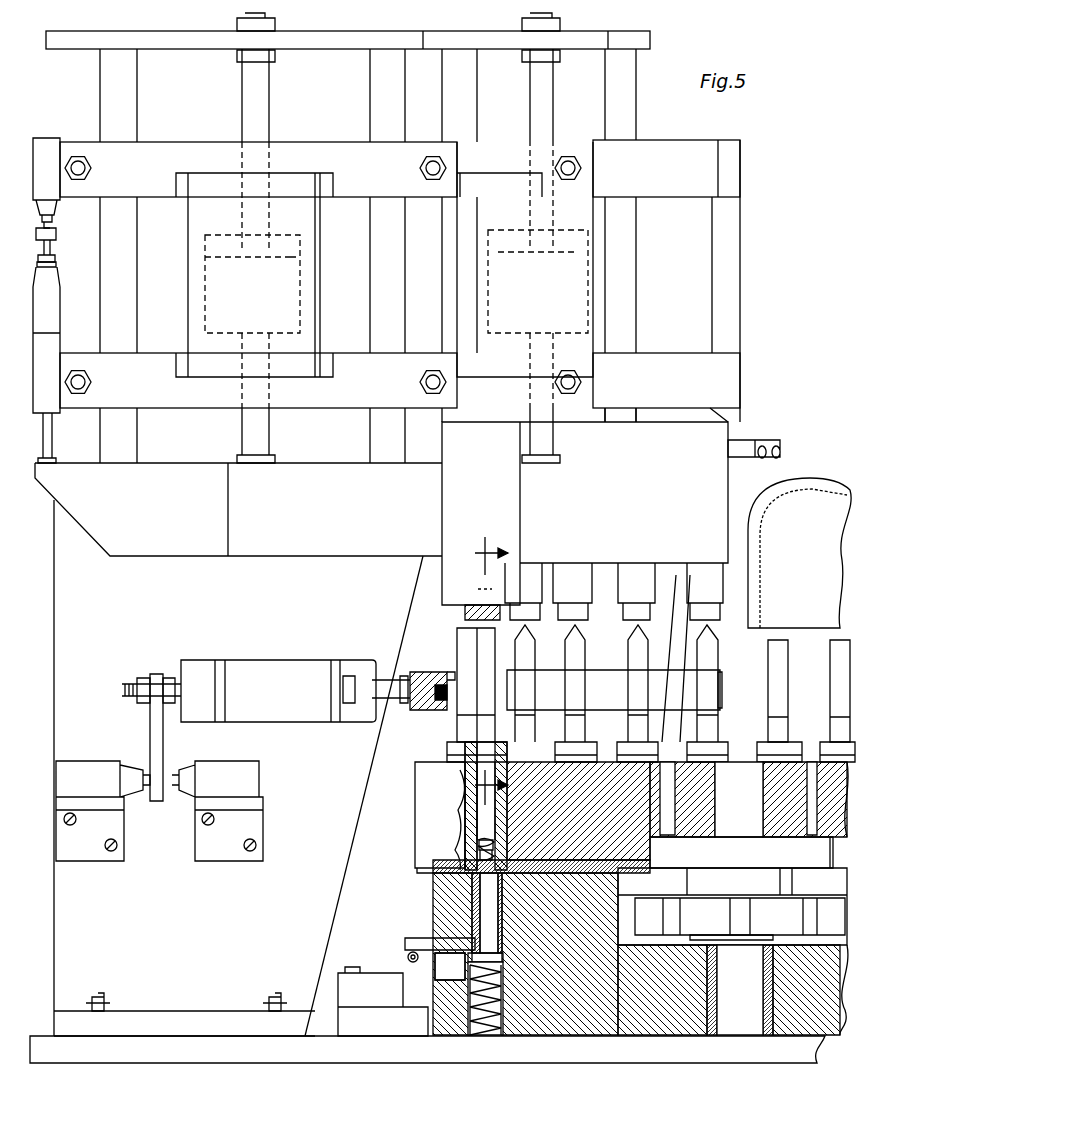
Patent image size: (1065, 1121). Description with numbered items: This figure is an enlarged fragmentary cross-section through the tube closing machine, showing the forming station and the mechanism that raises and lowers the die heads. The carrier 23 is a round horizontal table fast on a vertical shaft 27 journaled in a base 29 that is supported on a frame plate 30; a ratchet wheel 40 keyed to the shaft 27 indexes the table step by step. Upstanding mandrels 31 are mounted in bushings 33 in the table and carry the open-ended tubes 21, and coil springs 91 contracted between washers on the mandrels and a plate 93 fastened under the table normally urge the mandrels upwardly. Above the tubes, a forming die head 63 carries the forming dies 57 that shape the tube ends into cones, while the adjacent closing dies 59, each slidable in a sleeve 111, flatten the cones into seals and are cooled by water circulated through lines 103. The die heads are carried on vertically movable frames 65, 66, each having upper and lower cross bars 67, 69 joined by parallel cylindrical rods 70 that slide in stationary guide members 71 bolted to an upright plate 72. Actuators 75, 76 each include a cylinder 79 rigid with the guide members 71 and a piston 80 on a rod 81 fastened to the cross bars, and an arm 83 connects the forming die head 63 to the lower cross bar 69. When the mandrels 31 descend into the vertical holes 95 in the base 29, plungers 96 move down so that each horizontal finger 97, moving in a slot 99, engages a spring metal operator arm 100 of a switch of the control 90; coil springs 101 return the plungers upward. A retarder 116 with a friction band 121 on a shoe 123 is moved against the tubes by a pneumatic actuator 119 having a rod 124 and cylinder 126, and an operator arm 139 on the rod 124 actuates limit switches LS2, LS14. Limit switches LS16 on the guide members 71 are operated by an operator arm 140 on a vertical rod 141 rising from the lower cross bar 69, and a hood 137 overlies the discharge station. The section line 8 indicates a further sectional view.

The vertically movable frame 65 is at (87, 135).
The vertically movable frame 66 is at (650, 130).
The upper cross bar 67 is at (207, 44).
The lower cross bar 69 is at (206, 557).
The cylindrical rods 70 is at (137, 86).
The stationary guide members 71 is at (336, 143).
The upright plate 72 is at (741, 246).
The fluid-operated actuator 75 is at (196, 240).
The fluid-operated actuator 76 is at (478, 271).
The cylinder 79 is at (321, 229).
The piston 80 is at (204, 258).
The rod 81 is at (248, 106).
The arm 83 is at (318, 557).
The forming die head 63 is at (442, 505).
The section line 8 is at (497, 666).
The cooling water lines 103 is at (768, 440).
The hood 137 is at (812, 480).
The sleeve 111 is at (690, 575).
The closing dies 59 is at (540, 622).
The forming dies 57 is at (465, 612).
The tubes 21 is at (480, 652).
The band 121 is at (455, 672).
The retarder 116 is at (425, 712).
The shoe 123 is at (410, 672).
The rod 124 is at (372, 700).
The cylinder 126 is at (275, 660).
The pneumatic actuator 119 is at (338, 664).
The operator arm 139 is at (150, 740).
The operator arm 140 is at (55, 236).
The vertical rod 141 is at (52, 437).
The mandrels 31 is at (480, 735).
The carrier 23 is at (414, 822).
The bushings 33 is at (462, 800).
The coil springs 91 is at (510, 822).
The vertical shaft 27 is at (722, 798).
The ratchet wheel 40 is at (660, 935).
The base 29 is at (630, 1036).
The plate 93 is at (433, 873).
The vertical holes 95 is at (500, 903).
The plungers 96 is at (495, 922).
The horizontal finger 97 is at (425, 945).
The operator arm 100 is at (408, 957).
The slot 99 is at (444, 983).
The coil springs 101 is at (505, 993).
The control 90 is at (398, 1025).
The frame plate 30 is at (272, 1063).
The limit switch LS16 is at (48, 310).
The limit switch LS2 is at (95, 768).
The limit switch LS14 is at (236, 768).